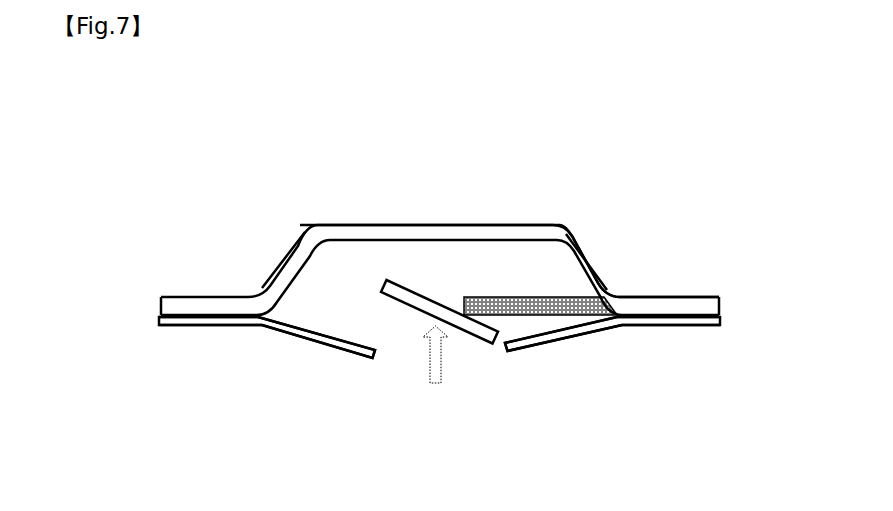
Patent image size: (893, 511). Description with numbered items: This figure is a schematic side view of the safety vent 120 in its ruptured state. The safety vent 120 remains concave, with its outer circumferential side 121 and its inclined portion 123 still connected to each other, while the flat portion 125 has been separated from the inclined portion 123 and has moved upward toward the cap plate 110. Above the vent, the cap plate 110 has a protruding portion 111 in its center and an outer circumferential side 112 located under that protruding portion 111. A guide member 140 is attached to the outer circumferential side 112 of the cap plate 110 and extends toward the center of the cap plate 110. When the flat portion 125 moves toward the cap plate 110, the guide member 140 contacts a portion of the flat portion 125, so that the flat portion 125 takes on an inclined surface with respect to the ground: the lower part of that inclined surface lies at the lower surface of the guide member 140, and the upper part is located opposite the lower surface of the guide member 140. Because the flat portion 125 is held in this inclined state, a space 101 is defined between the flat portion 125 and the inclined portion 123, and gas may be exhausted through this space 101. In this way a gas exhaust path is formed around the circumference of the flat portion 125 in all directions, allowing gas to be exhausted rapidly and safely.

The cap plate 110 is at (430, 178).
The protruding portion 111 is at (362, 224).
The outer circumferential side 112 is at (618, 291).
The space 101 is at (366, 306).
The guide member 140 is at (502, 297).
The safety vent 120 is at (138, 334).
The outer circumferential side 121 is at (197, 326).
The inclined portion 123 is at (317, 345).
The flat portion 125 is at (477, 338).